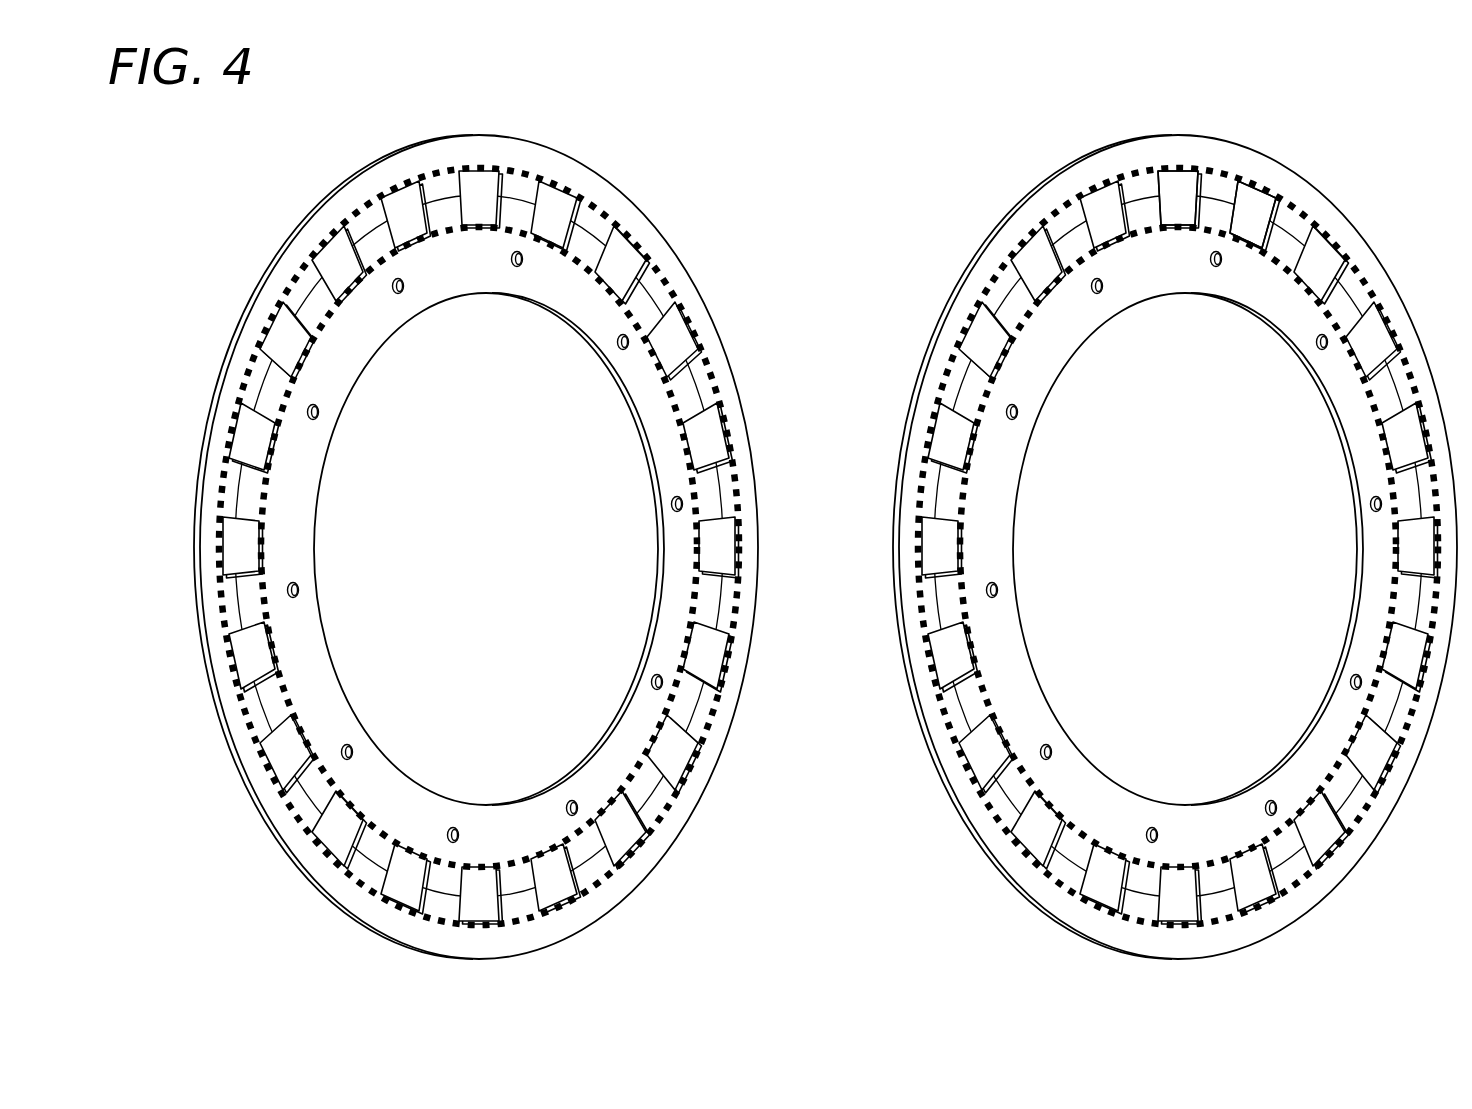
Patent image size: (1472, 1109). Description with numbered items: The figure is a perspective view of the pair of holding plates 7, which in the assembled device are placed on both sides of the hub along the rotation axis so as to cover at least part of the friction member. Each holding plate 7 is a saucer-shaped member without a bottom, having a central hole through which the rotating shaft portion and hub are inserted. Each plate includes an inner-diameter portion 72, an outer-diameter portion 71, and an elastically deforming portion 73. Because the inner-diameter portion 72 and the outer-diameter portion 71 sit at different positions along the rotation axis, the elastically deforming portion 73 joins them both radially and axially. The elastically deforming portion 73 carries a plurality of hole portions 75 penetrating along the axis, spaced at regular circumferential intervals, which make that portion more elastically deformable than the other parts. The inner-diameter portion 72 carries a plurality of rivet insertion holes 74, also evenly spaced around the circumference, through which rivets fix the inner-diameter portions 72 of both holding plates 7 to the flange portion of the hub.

The holding plate 7 is at (1117, 150).
The outer-diameter portion 71 is at (1062, 207).
The inner-diameter portion 72 is at (1013, 362).
The elastically deforming portion 73 is at (1008, 290).
The rivet insertion hole 74 is at (1010, 414).
The hole portion 75 is at (1257, 213).